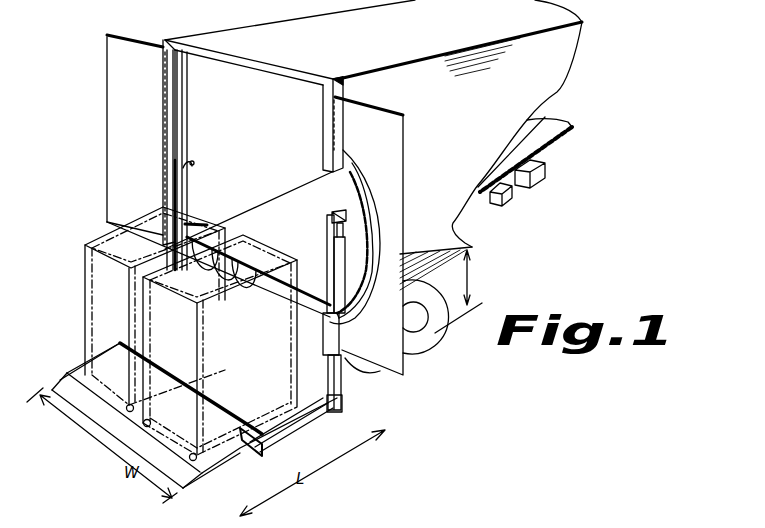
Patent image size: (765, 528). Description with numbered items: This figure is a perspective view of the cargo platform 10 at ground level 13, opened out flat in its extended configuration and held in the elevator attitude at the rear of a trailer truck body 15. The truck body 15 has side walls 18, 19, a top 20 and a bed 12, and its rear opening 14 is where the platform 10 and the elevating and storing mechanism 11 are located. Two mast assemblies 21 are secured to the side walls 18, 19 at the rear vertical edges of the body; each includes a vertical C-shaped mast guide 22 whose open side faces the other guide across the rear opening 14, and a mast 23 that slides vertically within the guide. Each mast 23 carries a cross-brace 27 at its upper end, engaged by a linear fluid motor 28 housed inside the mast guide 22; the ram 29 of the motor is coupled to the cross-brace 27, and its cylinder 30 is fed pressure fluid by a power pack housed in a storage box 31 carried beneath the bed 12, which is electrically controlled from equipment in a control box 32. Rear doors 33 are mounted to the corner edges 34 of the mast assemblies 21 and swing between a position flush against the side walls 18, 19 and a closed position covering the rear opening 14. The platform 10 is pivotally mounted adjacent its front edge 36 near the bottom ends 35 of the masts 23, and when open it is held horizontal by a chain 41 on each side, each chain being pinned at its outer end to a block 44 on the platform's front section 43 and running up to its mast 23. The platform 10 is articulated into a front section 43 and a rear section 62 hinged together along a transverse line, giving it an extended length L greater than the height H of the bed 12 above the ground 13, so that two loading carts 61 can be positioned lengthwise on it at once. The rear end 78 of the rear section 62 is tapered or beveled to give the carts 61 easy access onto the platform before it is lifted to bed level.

The cargo platform 10 is at (90, 449).
The elevating and storing mechanism 11 is at (208, 184).
The bed 12 is at (290, 205).
The ground level 13 is at (470, 308).
The rear opening 14 is at (262, 84).
The trailer truck body 15 is at (573, 46).
The side wall 18 is at (484, 118).
The side wall 19 is at (262, 113).
The top 20 is at (440, 31).
The mast assembly 21 is at (194, 114).
The mast guide 22 is at (192, 137).
The mast 23 is at (183, 172).
The cross-brace 27 is at (366, 192).
The linear fluid motor 28 is at (355, 300).
The ram 29 is at (344, 231).
The cylinder 30 is at (327, 258).
The storage box 31 is at (546, 170).
The control box 32 is at (512, 192).
The rear door 33 is at (160, 50).
The corner edge 34 is at (176, 40).
The bottom end 35 is at (344, 394).
The front edge 36 is at (280, 360).
The chain 41 is at (173, 333).
The front section 43 is at (248, 383).
The block 44 is at (290, 426).
The loading cart 61 is at (83, 335).
The rear section 62 is at (80, 372).
The rear end 78 is at (90, 403).